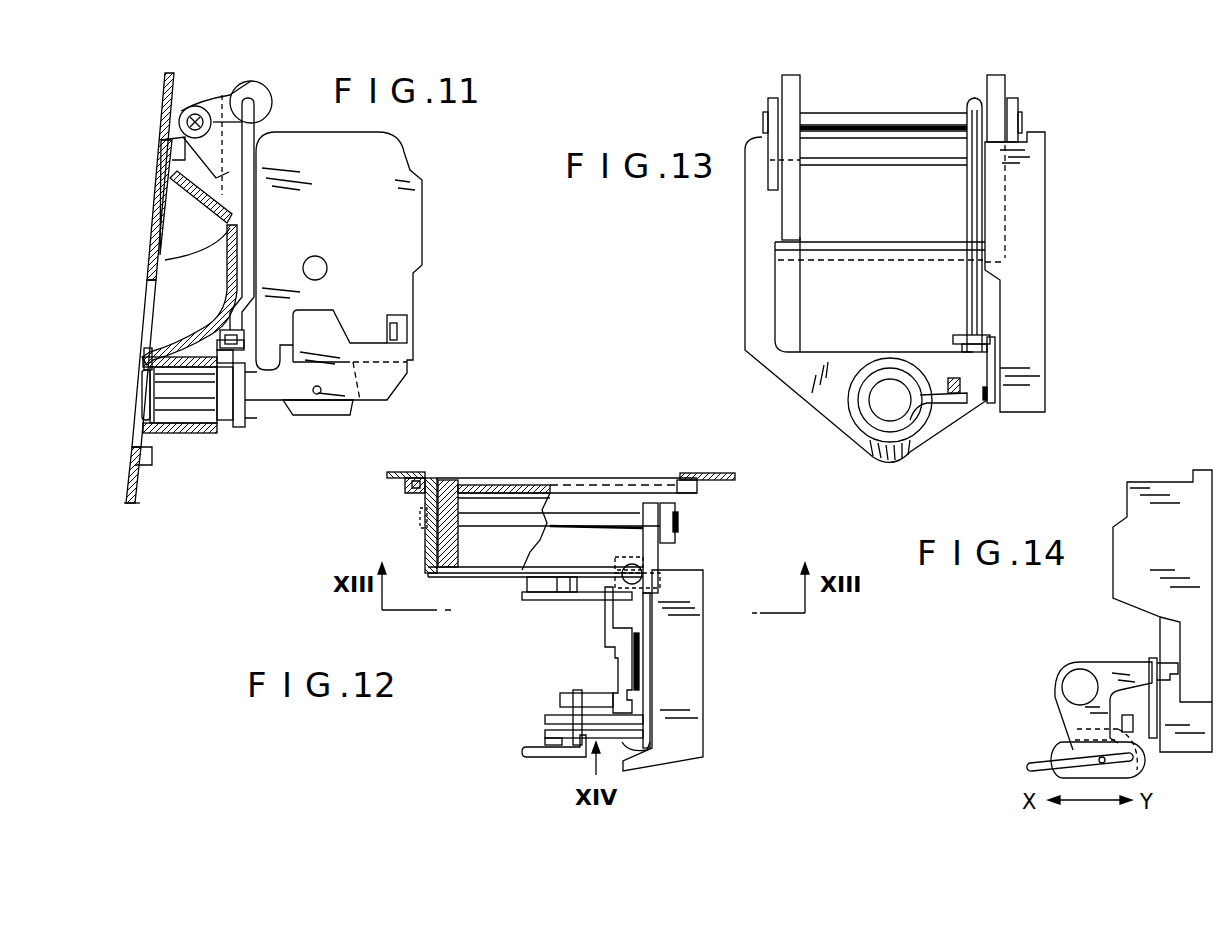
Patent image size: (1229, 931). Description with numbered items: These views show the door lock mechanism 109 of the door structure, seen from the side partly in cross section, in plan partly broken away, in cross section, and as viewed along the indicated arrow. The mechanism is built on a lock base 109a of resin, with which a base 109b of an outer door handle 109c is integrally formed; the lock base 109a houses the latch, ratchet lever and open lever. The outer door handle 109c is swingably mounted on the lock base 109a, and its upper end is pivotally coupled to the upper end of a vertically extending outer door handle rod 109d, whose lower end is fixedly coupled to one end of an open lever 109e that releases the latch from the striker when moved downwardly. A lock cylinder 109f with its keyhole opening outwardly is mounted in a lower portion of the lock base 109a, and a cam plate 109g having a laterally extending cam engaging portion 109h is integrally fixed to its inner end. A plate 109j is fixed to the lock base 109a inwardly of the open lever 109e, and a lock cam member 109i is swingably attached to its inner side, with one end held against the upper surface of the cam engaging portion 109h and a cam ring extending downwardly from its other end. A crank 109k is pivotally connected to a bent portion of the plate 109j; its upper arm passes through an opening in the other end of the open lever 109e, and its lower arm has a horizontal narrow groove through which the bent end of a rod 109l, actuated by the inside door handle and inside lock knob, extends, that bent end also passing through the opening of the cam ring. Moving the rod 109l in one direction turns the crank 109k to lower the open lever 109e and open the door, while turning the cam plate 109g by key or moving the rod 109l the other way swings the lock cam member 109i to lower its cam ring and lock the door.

In FIG. 11, the door lock mechanism 109 is at (445, 323).
In FIG. 11, the lock base 109a is at (400, 166).
In FIG. 13, the lock base 109a is at (1040, 228).
In FIG. 12, the lock base 109a is at (685, 635).
In FIG. 14, the lock base 109a is at (1170, 497).
In FIG. 11, the base of outer door handle 109b is at (165, 334).
In FIG. 12, the base of outer door handle 109b is at (430, 478).
In FIG. 11, the outer door handle 109c is at (160, 212).
In FIG. 12, the outer door handle 109c is at (463, 480).
In FIG. 11, the outer door handle rod 109d is at (255, 210).
In FIG. 13, the outer door handle rod 109d is at (970, 210).
In FIG. 12, the outer door handle rod 109d is at (645, 582).
In FIG. 11, the open lever 109e is at (327, 327).
In FIG. 13, the open lever 109e is at (995, 345).
In FIG. 12, the open lever 109e is at (655, 730).
In FIG. 14, the open lever 109e is at (1150, 657).
In FIG. 11, the lock cylinder 109f is at (178, 412).
In FIG. 11, the cam plate 109g is at (238, 427).
In FIG. 13, the cam plate 109g is at (868, 404).
In FIG. 12, the cam plate 109g is at (532, 602).
In FIG. 13, the cam engaging portion 109h is at (948, 403).
In FIG. 12, the lock cam member 109i is at (628, 651).
In FIG. 14, the lock cam member 109i is at (1055, 748).
In FIG. 12, the plate 109j is at (568, 720).
In FIG. 12, the crank 109k is at (660, 748).
In FIG. 14, the crank 109k is at (1072, 713).
In FIG. 12, the rod 109l is at (522, 753).
In FIG. 14, the rod 109l is at (1030, 766).